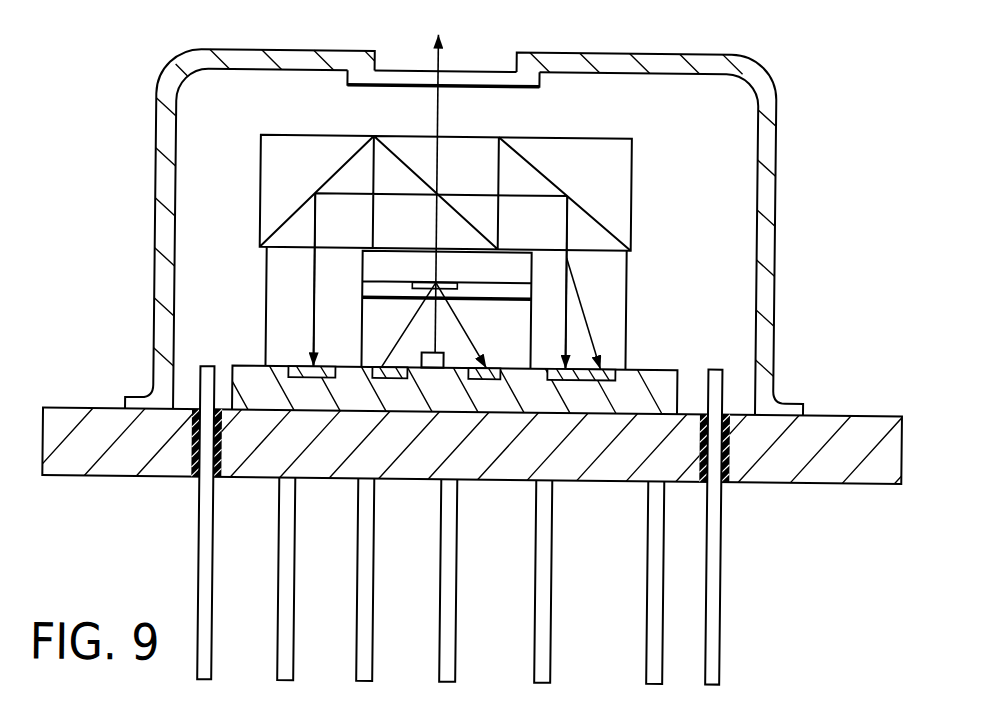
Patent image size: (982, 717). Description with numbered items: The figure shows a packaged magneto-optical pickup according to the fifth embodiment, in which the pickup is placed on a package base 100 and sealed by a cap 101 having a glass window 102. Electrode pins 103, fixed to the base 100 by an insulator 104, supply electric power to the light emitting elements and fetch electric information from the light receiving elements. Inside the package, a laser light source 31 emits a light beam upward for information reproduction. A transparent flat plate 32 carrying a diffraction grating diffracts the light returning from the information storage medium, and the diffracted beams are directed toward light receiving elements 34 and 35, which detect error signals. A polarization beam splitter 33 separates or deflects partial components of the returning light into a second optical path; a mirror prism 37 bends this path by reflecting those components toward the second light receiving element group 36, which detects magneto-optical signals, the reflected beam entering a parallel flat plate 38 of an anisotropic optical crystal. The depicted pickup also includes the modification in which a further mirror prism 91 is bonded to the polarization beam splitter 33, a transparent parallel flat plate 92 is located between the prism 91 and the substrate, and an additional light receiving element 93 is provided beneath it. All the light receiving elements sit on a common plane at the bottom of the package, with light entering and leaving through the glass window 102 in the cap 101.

The laser light source 31 is at (440, 353).
The transparent flat plate 32 is at (502, 285).
The polarization beam splitter 33 is at (454, 142).
The light receiving element 34 is at (375, 368).
The light receiving element 35 is at (488, 368).
The second light receiving element group 36 is at (615, 366).
The mirror prism 37 is at (628, 158).
The parallel flat plate 38 is at (624, 273).
The mirror prism 91 is at (460, 169).
The transparent parallel flat plate 92 is at (265, 302).
The light receiving element 93 is at (302, 368).
The package base 100 is at (852, 408).
The cap 101 is at (773, 168).
The glass window 102 is at (486, 70).
The electrode pins 103 is at (724, 626).
The insulator 104 is at (731, 454).